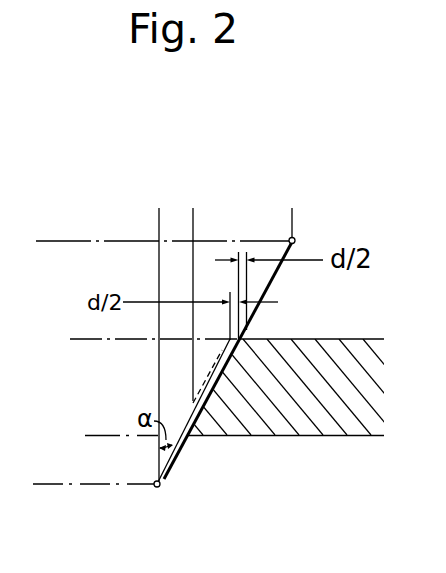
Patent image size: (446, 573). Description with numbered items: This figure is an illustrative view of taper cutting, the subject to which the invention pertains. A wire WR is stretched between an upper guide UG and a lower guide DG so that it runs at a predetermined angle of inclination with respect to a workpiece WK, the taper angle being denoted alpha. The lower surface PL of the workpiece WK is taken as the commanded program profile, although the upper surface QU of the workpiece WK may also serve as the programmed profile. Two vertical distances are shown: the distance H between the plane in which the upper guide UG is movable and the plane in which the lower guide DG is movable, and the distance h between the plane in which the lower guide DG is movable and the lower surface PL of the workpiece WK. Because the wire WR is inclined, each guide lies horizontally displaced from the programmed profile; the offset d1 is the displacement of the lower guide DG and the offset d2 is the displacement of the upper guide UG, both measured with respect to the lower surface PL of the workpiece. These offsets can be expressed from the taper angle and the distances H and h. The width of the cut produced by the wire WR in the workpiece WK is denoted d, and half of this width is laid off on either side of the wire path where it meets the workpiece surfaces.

The upper guide UG is at (295, 238).
The lower guide DG is at (160, 487).
The wire WR is at (272, 281).
The workpiece WK is at (349, 436).
The lower surface of the workpiece PL is at (190, 440).
The upper surface of the workpiece QU is at (247, 337).
The vertical distance between guide planes H is at (42, 248).
The vertical distance between lower guide plane and workpiece lower surface h is at (92, 442).
The width of the cut d is at (257, 373).
The offset of the lower guide d1 is at (218, 215).
The offset of the upper guide d2 is at (285, 215).